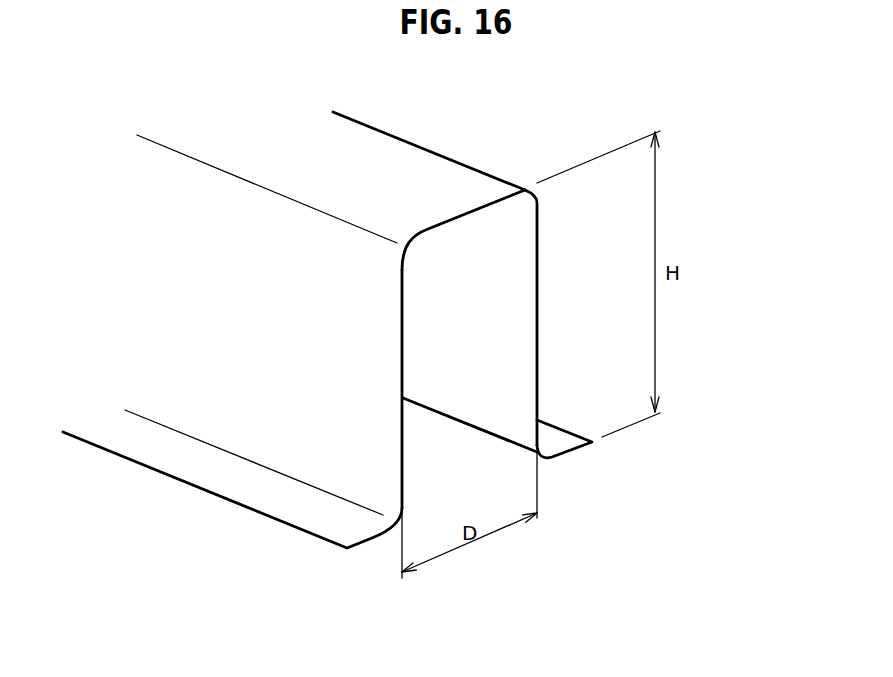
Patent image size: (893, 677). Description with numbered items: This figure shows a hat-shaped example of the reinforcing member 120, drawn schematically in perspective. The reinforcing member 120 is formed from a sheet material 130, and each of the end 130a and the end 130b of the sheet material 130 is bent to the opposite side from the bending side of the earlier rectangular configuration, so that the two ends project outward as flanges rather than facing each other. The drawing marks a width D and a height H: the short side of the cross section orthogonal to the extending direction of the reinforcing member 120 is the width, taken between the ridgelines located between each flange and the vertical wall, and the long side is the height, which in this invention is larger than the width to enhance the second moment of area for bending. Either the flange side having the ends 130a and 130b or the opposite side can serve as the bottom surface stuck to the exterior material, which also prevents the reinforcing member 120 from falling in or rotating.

The reinforcing member 120 is at (388, 170).
The sheet material 130 is at (522, 298).
The end of sheet material 130a is at (303, 530).
The end of sheet material 130b is at (555, 423).